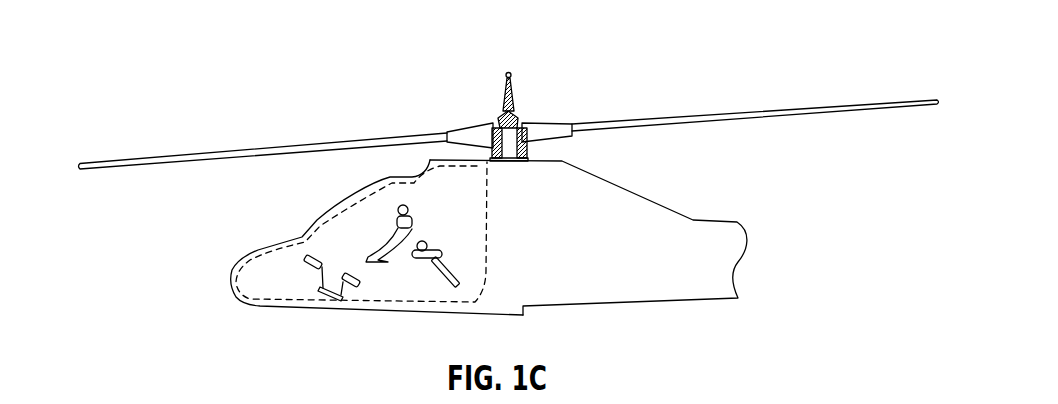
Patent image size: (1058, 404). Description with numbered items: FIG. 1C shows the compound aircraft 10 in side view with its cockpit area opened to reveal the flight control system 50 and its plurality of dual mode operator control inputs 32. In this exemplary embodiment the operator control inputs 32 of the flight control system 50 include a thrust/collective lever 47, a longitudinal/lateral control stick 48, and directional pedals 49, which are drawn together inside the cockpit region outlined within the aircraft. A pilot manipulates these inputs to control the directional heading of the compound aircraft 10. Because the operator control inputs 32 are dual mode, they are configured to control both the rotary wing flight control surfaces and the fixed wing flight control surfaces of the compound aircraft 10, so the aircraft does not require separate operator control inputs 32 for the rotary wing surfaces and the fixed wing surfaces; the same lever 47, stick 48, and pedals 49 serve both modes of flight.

The compound aircraft 10 is at (767, 45).
The operator control inputs 32 is at (418, 213).
The thrust/collective lever 47 is at (438, 278).
The longitudinal/lateral control stick 48 is at (378, 247).
The directional pedals 49 is at (335, 293).
The flight control system 50 is at (490, 255).